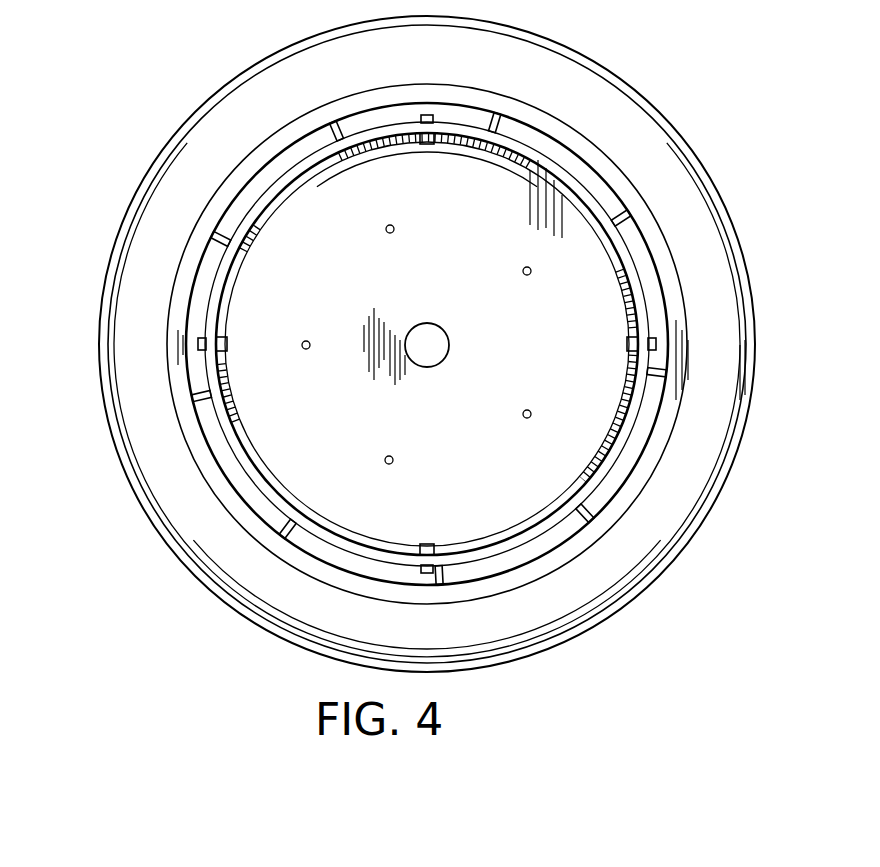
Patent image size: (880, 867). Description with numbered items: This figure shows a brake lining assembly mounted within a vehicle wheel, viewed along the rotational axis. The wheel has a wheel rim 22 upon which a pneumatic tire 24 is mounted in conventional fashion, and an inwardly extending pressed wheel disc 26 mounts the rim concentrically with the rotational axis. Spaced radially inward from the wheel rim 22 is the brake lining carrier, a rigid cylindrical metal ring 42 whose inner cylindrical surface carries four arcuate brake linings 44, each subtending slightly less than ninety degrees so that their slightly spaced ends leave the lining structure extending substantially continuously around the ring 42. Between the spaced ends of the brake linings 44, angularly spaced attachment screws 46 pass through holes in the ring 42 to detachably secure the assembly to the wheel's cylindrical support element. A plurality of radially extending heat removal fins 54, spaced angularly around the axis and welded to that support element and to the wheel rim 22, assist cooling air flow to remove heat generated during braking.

The wheel rim 22 is at (568, 118).
The pneumatic tire 24 is at (625, 112).
The pressed wheel disc 26 is at (448, 287).
The rigid cylindrical metal ring 42 is at (213, 272).
The arcuate brake linings 44 is at (303, 182).
The attachment screws 46 is at (430, 140).
The heat removal fins 54 is at (325, 130).